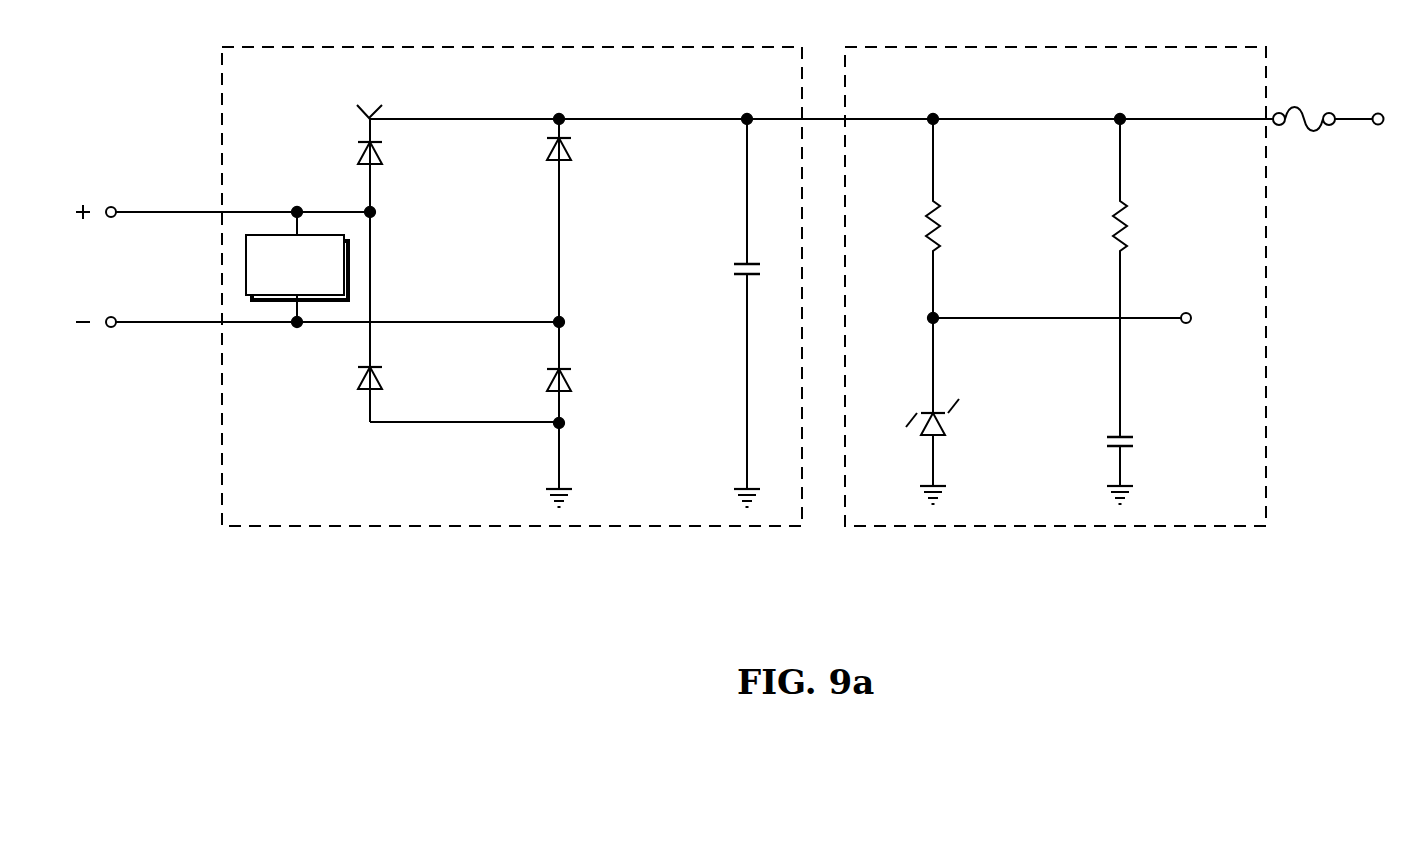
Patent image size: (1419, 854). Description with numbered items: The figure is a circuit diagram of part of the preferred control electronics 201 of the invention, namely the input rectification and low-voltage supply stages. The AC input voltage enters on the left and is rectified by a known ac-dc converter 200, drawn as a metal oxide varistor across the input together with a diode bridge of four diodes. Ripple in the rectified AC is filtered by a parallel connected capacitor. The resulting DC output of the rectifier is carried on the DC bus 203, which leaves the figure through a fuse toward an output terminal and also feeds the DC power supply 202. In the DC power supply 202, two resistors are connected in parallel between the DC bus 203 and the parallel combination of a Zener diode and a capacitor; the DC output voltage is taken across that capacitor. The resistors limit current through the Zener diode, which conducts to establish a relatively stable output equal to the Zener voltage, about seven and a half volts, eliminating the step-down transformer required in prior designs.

The ac-dc converter 200 is at (340, 527).
The control electronics 201 is at (738, 321).
The DC power supply 202 is at (985, 527).
The DC bus 203 is at (1155, 118).